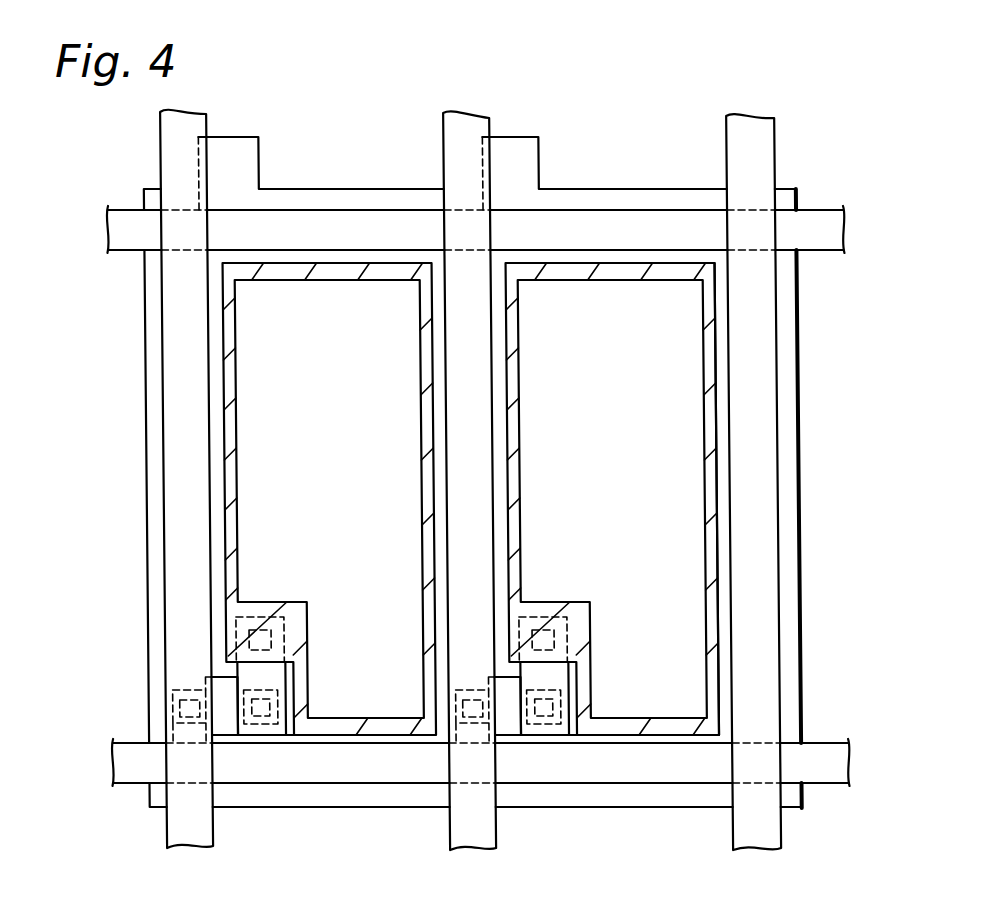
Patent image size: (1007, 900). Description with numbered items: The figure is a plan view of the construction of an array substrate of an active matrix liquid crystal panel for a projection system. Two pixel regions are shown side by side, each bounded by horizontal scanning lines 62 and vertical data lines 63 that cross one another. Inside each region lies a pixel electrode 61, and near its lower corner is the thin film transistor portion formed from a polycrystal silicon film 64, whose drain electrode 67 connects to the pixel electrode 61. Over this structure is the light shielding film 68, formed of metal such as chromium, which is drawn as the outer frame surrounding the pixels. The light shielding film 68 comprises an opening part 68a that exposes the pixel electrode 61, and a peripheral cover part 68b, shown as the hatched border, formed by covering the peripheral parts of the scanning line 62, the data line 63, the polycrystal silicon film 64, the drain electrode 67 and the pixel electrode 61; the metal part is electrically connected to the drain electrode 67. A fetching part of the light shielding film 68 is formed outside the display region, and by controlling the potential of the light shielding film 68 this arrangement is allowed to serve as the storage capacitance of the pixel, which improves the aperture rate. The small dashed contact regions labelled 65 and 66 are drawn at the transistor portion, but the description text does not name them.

The pixel electrode 61 is at (713, 370).
The scanning line 62 is at (102, 752).
The data line 63 is at (155, 826).
The polycrystal silicon film 64 is at (182, 688).
The contact hole 65 is at (171, 708).
The source electrode 66 is at (216, 735).
The drain electrode 67 is at (227, 640).
The light shielding film 68 is at (797, 503).
The opening part 68a is at (656, 578).
The peripheral cover part 68b is at (712, 610).